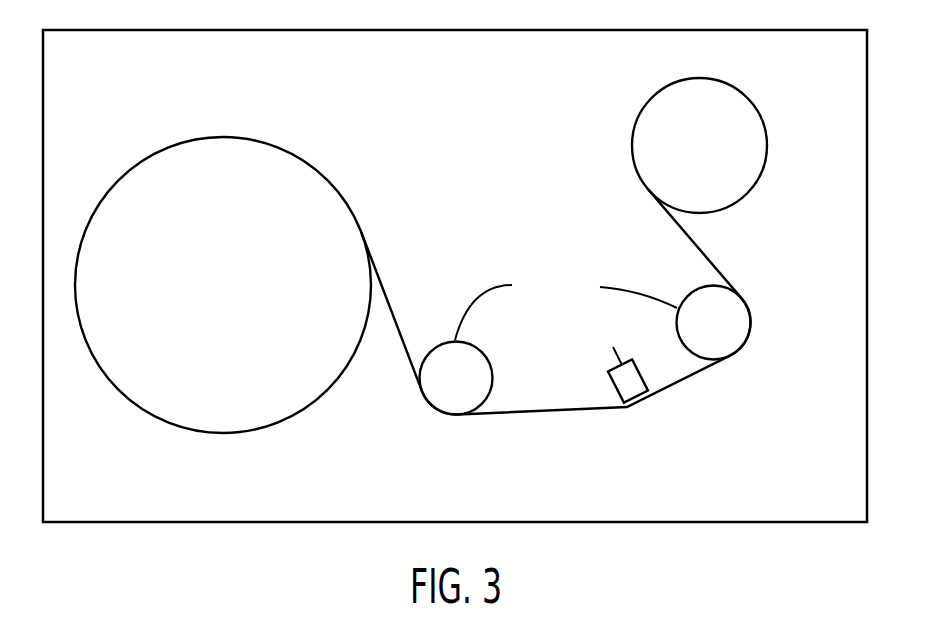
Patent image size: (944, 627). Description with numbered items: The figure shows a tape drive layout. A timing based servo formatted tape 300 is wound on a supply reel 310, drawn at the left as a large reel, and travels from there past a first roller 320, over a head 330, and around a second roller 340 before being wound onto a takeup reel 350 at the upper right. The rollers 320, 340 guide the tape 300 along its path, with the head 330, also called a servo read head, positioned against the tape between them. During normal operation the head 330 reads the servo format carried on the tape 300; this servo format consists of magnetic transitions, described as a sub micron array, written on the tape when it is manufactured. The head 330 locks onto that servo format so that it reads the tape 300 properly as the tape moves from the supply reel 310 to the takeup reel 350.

The timing based servo formatted tape 300 is at (397, 313).
The supply reel 310 is at (321, 170).
The roller 320 is at (450, 398).
The head 330 is at (627, 383).
The roller 340 is at (738, 323).
The takeup reel 350 is at (757, 147).